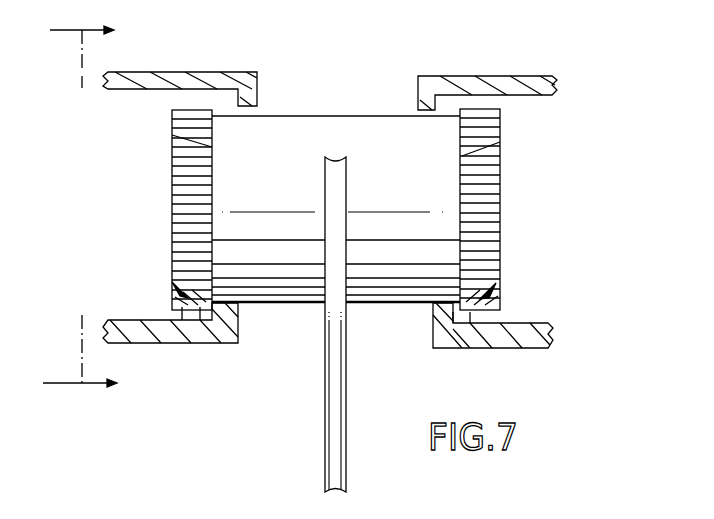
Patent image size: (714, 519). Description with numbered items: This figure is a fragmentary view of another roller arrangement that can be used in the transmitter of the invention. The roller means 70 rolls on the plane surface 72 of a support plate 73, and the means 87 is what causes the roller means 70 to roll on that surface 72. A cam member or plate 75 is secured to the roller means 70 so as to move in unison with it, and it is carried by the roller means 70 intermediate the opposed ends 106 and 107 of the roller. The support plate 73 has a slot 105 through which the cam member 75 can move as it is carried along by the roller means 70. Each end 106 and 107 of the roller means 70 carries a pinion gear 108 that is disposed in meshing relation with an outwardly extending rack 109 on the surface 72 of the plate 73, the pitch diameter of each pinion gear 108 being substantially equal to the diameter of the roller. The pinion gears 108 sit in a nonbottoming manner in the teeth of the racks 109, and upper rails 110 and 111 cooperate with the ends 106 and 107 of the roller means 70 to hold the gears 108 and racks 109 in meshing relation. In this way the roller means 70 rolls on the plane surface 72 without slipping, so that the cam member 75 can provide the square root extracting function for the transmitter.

The roller means 70 is at (322, 118).
The surface 72 is at (232, 302).
The support plate 73 is at (545, 334).
The cam member 75 is at (347, 394).
The means 87 is at (500, 48).
The slot 105 is at (297, 329).
The end 106 is at (172, 135).
The end 107 is at (500, 142).
The pinion gear 108 is at (183, 210).
The rack 109 is at (170, 279).
The upper rail 110 is at (203, 70).
The upper rail 111 is at (441, 75).